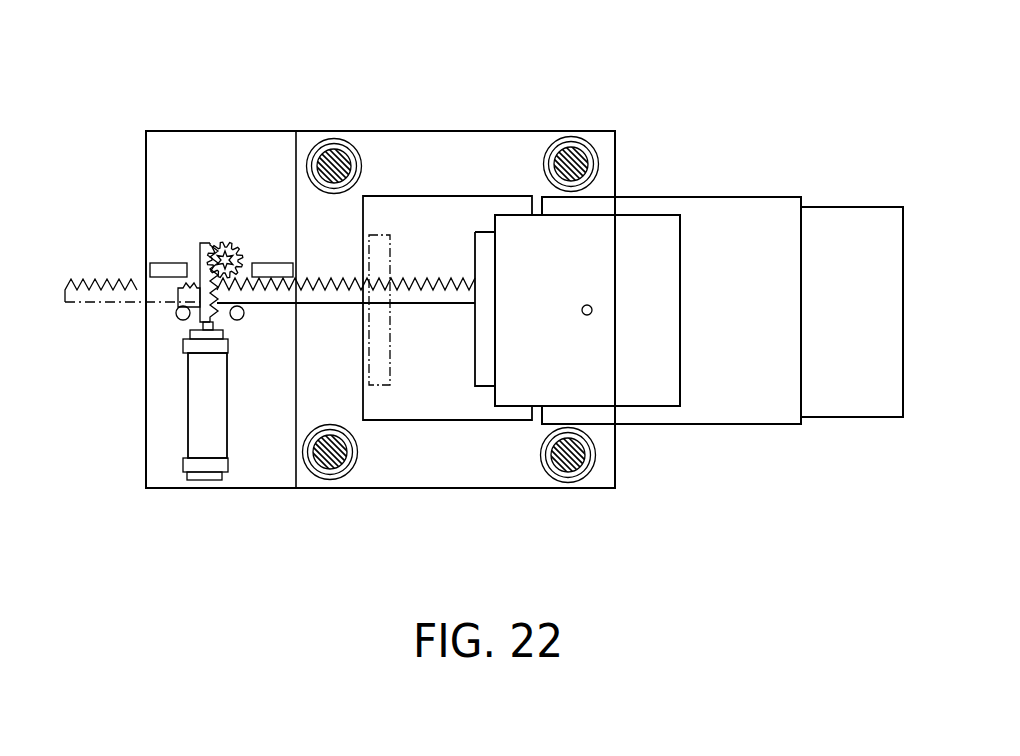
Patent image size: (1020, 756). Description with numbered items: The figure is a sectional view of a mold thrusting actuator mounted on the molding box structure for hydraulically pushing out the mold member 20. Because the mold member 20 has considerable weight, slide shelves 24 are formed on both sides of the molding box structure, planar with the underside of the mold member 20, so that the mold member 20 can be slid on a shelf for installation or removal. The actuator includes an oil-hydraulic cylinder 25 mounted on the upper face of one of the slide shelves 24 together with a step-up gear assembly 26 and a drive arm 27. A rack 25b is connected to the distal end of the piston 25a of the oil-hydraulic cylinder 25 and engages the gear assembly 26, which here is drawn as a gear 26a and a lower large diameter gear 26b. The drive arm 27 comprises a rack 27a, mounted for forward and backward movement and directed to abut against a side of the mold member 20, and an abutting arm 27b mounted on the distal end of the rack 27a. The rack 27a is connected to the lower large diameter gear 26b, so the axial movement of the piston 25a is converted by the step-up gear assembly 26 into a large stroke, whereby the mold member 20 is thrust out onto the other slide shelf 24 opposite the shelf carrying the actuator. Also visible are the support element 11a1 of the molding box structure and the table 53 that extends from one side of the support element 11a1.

The support element 11a1 is at (499, 155).
The mold member 20 is at (655, 215).
The slide shelves 24 is at (752, 425).
The oil-hydraulic cylinder 25 is at (188, 405).
The piston 25a is at (200, 323).
The rack 25b is at (200, 252).
The step-up gear assembly 26 is at (278, 140).
The gear 26a is at (223, 240).
The lower large diameter gear 26b is at (243, 243).
The drive arm 27 is at (298, 402).
The rack 27a is at (428, 307).
The abutting arm 27b is at (480, 384).
The table 53 is at (878, 418).